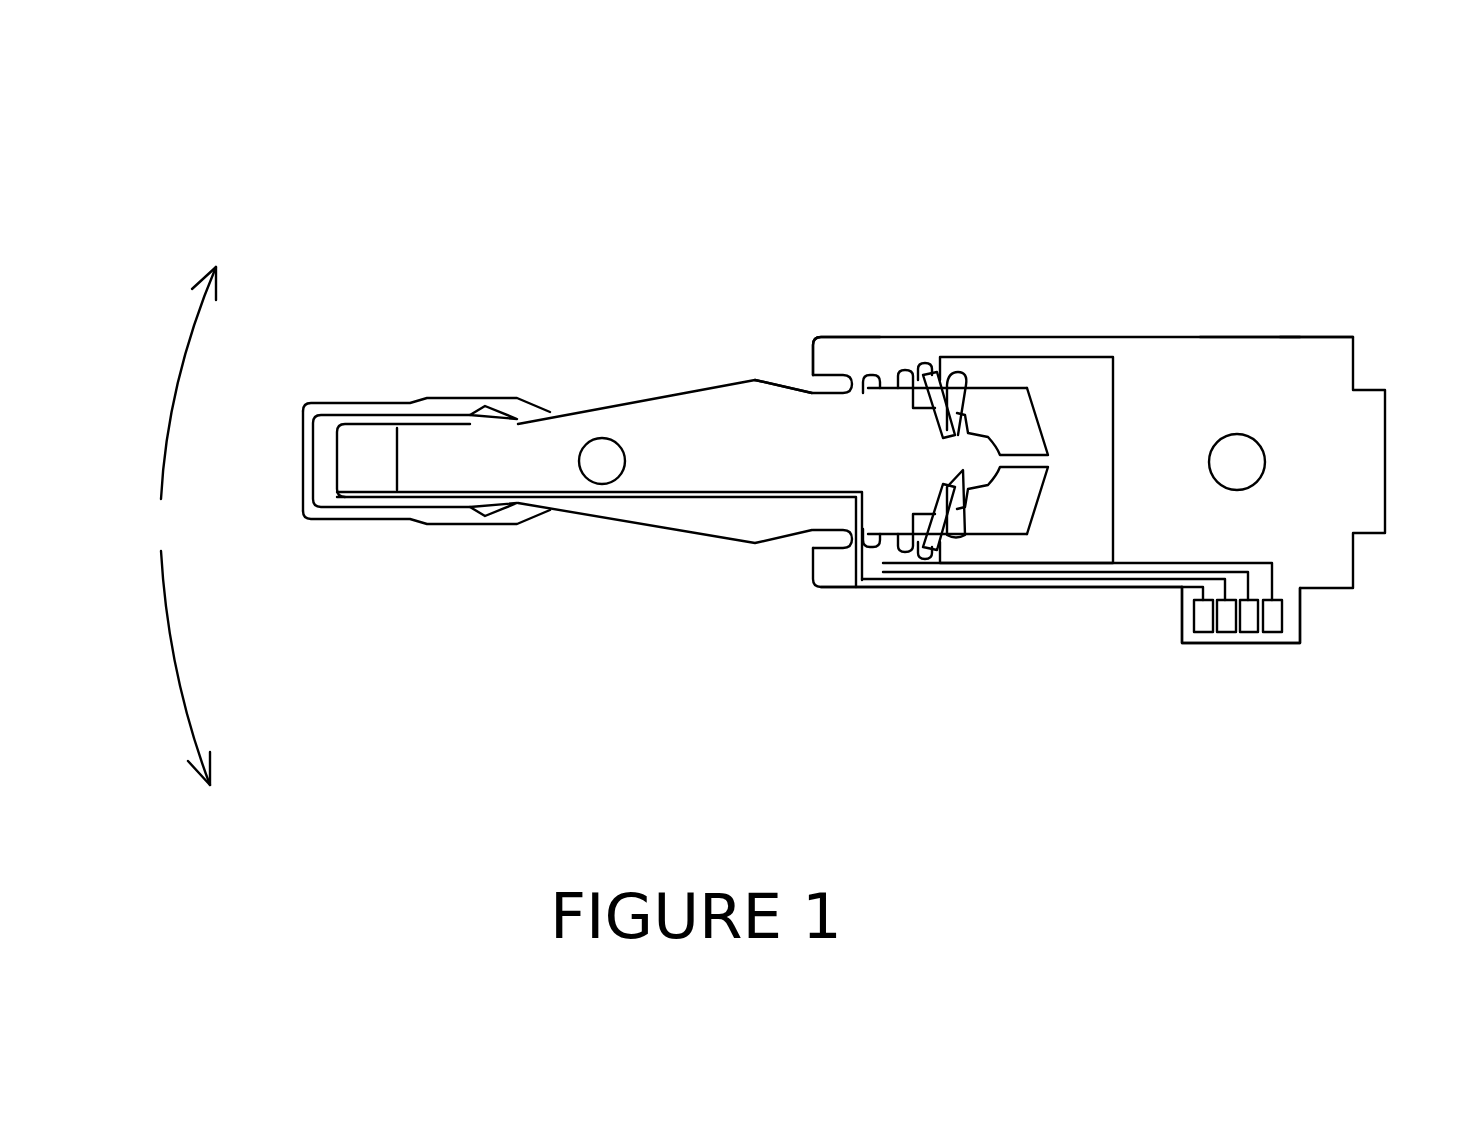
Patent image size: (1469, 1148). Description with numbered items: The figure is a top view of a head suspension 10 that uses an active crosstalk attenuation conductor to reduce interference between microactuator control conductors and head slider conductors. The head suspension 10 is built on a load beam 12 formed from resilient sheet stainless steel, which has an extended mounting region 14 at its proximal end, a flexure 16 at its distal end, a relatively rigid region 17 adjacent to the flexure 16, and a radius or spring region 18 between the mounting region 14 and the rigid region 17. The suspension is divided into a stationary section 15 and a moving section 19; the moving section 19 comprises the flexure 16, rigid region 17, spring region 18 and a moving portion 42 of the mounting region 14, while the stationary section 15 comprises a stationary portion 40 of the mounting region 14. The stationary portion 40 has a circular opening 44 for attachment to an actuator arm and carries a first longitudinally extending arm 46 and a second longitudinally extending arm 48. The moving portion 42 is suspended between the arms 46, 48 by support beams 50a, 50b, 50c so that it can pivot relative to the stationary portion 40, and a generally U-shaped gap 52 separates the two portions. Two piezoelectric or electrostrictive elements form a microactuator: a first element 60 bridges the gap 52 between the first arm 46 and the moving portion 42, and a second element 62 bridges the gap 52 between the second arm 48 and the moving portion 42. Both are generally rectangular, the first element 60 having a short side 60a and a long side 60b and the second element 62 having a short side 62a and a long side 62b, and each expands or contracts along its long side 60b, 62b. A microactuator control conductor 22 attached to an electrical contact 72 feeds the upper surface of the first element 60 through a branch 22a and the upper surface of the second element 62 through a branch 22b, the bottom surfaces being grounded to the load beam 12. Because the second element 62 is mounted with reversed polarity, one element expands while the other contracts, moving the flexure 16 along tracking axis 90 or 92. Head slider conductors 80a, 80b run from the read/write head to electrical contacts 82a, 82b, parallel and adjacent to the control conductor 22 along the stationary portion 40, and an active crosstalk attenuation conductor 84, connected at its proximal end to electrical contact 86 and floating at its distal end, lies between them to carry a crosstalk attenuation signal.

The head suspension 10 is at (626, 229).
The load beam 12 is at (527, 725).
The mounting region 14 is at (1355, 352).
The stationary section 15 is at (1245, 337).
The flexure 16 is at (407, 519).
The rigid region 17 is at (583, 516).
The spring region 18 is at (822, 391).
The moving section 19 is at (615, 405).
The microactuator control conductor 22 is at (1258, 563).
The branch 22a is at (1078, 563).
The branch 22b is at (1113, 393).
The stationary portion 40 is at (1305, 337).
The moving portion 42 is at (887, 532).
The circular opening 44 is at (1257, 438).
The first longitudinally extending arm 46 is at (872, 587).
The second longitudinally extending arm 48 is at (847, 337).
The support beam 50a is at (840, 545).
The support beam 50b is at (1022, 468).
The support beam 50c is at (838, 386).
The gap 52 is at (928, 548).
The first element 60 is at (933, 550).
The short side 60a is at (965, 540).
The long side 60b is at (923, 557).
The second element 62 is at (948, 435).
The short side 62a is at (960, 372).
The long side 62b is at (937, 428).
The electrical contact 72 is at (1273, 632).
The head slider conductor 80a is at (1055, 579).
The head slider conductor 80b is at (1095, 587).
The electrical contact 82a is at (1228, 632).
The electrical contact 82b is at (1203, 632).
The active crosstalk attenuation conductor 84 is at (1183, 565).
The electrical contact 86 is at (1250, 632).
The tracking axis 90 is at (178, 345).
The tracking axis 92 is at (177, 671).